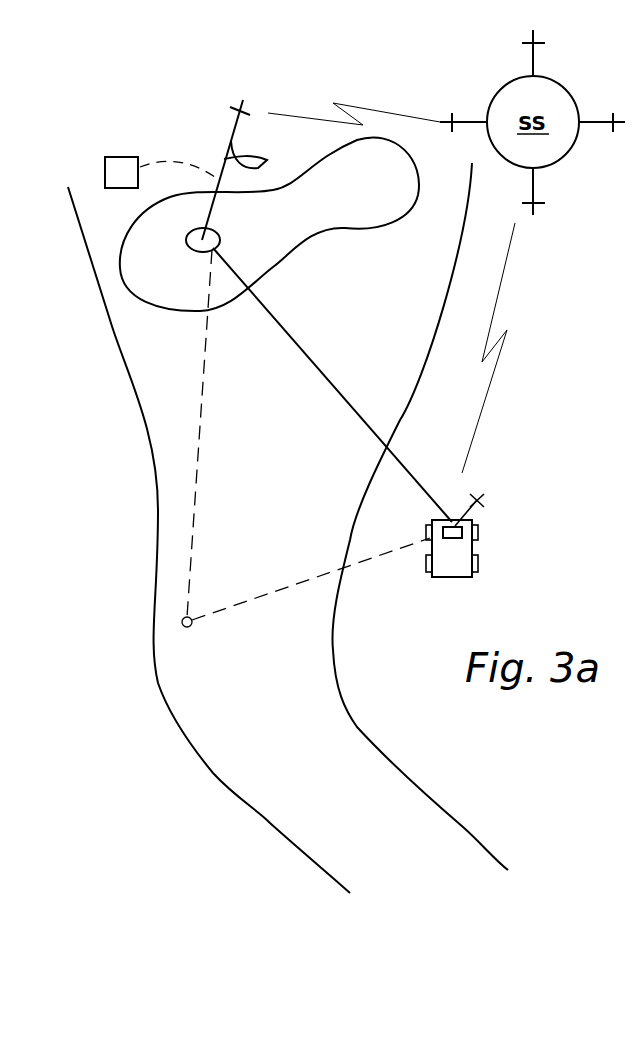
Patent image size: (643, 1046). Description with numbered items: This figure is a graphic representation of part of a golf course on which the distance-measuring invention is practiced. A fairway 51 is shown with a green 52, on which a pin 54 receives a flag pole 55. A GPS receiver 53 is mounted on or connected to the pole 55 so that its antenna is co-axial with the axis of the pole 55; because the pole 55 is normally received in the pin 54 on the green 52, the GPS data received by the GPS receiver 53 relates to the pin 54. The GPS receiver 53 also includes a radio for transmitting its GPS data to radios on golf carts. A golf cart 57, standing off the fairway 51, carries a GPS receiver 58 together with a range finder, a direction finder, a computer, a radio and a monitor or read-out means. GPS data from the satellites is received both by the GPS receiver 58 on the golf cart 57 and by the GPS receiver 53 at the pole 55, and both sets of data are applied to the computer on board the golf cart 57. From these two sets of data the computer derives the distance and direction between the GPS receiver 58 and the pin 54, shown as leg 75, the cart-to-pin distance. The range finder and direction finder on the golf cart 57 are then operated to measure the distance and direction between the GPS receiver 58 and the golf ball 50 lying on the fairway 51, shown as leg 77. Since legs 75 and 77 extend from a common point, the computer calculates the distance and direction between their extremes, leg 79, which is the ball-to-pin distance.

The golf ball 50 is at (192, 617).
The fairway 51 is at (316, 781).
The green 52 is at (376, 191).
The GPS receiver 53 is at (123, 157).
The pin 54 is at (185, 247).
The flag pole 55 is at (211, 210).
The golf cart 57 is at (472, 543).
The GPS receiver 58 is at (463, 530).
The leg 75 is at (308, 353).
The leg 77 is at (313, 583).
The leg 79 is at (205, 370).